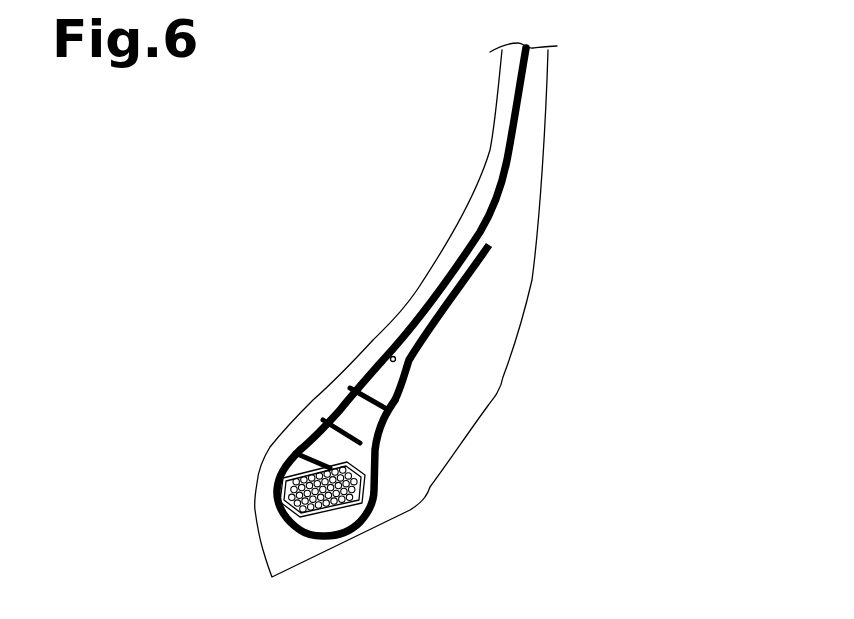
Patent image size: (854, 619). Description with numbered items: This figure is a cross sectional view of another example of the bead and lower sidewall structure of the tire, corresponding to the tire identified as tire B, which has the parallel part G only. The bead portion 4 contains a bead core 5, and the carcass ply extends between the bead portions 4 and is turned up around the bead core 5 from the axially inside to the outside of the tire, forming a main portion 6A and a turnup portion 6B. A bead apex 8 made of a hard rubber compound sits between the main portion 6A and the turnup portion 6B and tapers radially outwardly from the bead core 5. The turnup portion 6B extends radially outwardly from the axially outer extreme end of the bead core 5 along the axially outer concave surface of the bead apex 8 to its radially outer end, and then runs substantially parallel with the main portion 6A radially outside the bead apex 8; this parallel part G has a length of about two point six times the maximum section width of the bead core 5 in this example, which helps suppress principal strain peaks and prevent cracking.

The bead portion 4 is at (556, 346).
The bead core 5 is at (283, 493).
The carcass ply main portion 6A is at (490, 250).
The carcass ply turnup portion 6B is at (490, 255).
The bead apex 8 is at (350, 413).
The parallel part G is at (425, 288).